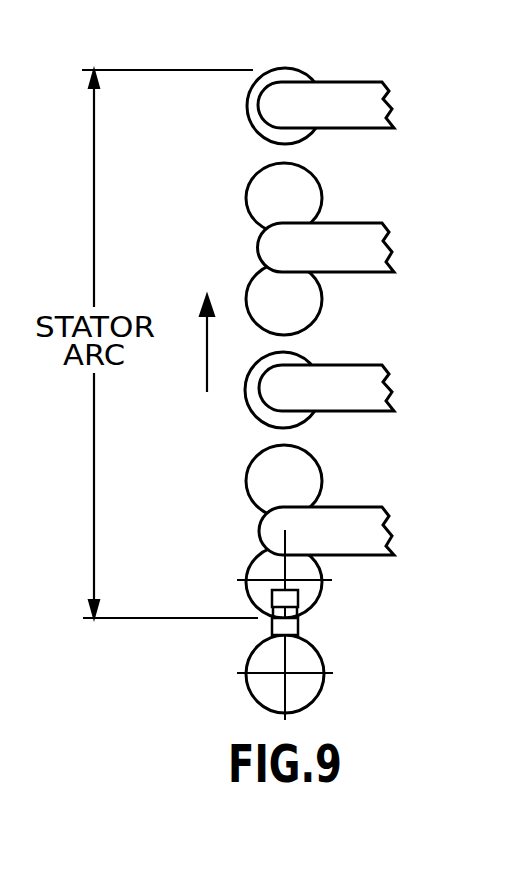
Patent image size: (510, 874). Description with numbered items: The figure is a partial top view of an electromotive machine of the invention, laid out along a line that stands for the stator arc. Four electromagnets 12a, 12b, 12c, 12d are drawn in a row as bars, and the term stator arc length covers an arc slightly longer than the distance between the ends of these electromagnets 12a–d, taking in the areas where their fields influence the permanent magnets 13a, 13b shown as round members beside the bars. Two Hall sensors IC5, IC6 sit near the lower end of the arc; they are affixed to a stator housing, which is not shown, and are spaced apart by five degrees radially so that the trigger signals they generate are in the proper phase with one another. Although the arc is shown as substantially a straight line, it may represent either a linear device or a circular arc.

The electromagnet 12a is at (348, 82).
The electromagnet 12b is at (348, 223).
The electromagnet 12c is at (348, 365).
The electromagnet 12d is at (348, 507).
The permanent magnet 13a is at (246, 105).
The permanent magnet 13b is at (246, 201).
The Hall sensor IC5 is at (298, 598).
The Hall sensor IC6 is at (298, 628).